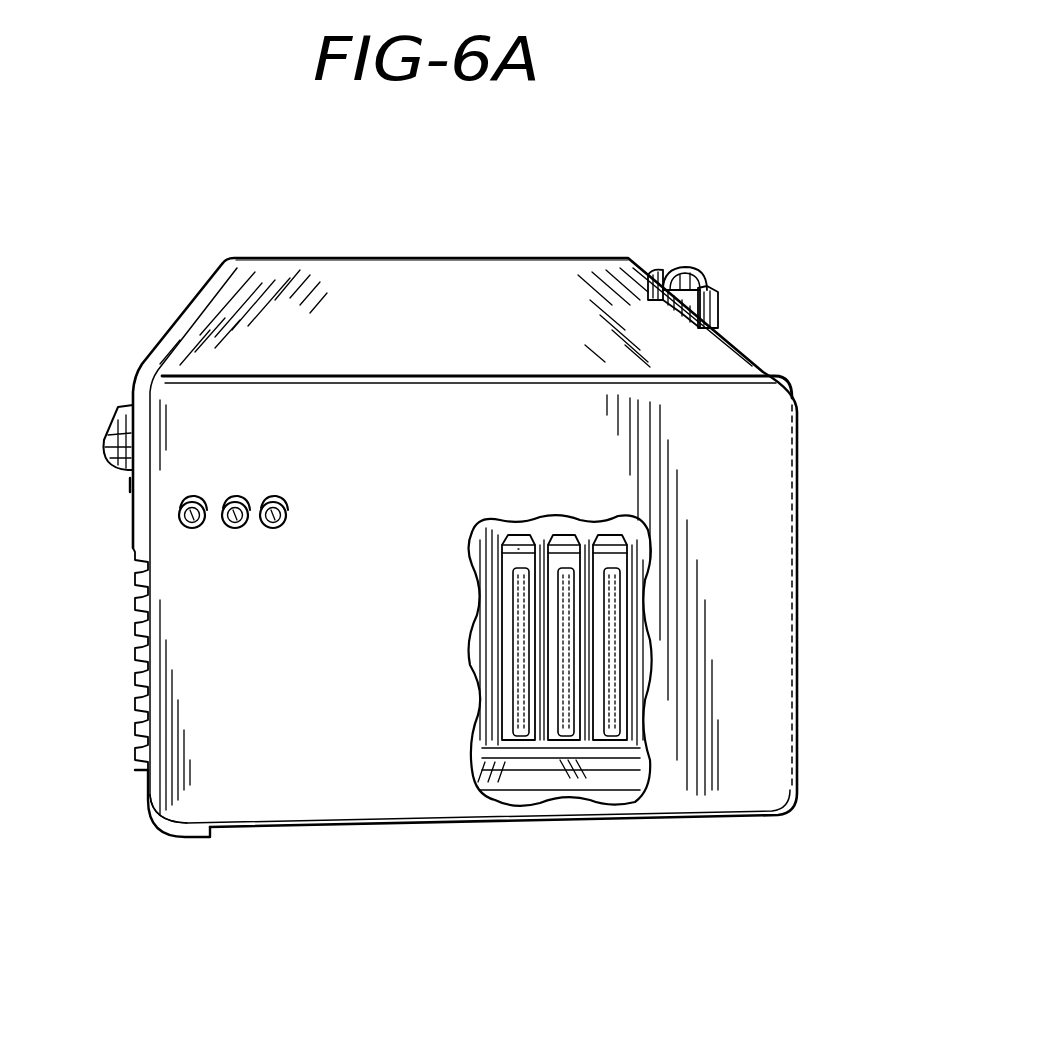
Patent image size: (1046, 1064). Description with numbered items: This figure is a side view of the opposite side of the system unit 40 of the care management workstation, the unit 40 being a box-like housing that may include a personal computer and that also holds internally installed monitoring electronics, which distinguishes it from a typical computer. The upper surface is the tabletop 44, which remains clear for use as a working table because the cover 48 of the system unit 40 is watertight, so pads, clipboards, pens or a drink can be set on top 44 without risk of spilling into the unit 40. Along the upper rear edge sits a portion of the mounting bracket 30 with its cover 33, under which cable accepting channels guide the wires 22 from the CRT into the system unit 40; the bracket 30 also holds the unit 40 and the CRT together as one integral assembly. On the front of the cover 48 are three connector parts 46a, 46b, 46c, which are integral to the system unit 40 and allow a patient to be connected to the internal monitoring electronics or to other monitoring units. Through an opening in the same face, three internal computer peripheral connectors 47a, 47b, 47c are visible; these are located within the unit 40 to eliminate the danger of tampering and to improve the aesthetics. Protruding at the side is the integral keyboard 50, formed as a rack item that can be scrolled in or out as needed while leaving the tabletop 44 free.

The wires 22 is at (697, 288).
The mounting bracket 30 is at (720, 305).
The cover 33 is at (652, 280).
The system unit 40 is at (795, 600).
The tabletop 44 is at (425, 278).
The connector part 46a is at (197, 530).
The connector part 46b is at (240, 530).
The connector part 46c is at (283, 527).
The internal computer peripheral connector 47a is at (537, 713).
The internal computer peripheral connector 47b is at (585, 715).
The internal computer peripheral connector 47c is at (627, 715).
The cover 48 is at (197, 785).
The integral keyboard 50 is at (115, 418).